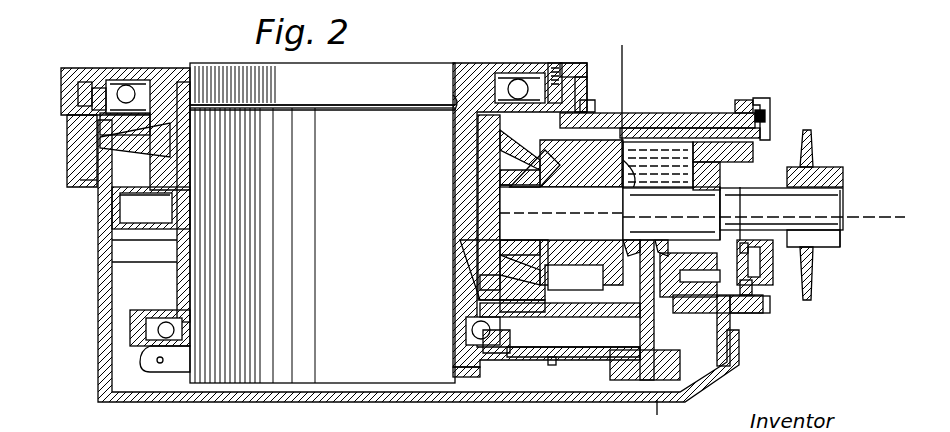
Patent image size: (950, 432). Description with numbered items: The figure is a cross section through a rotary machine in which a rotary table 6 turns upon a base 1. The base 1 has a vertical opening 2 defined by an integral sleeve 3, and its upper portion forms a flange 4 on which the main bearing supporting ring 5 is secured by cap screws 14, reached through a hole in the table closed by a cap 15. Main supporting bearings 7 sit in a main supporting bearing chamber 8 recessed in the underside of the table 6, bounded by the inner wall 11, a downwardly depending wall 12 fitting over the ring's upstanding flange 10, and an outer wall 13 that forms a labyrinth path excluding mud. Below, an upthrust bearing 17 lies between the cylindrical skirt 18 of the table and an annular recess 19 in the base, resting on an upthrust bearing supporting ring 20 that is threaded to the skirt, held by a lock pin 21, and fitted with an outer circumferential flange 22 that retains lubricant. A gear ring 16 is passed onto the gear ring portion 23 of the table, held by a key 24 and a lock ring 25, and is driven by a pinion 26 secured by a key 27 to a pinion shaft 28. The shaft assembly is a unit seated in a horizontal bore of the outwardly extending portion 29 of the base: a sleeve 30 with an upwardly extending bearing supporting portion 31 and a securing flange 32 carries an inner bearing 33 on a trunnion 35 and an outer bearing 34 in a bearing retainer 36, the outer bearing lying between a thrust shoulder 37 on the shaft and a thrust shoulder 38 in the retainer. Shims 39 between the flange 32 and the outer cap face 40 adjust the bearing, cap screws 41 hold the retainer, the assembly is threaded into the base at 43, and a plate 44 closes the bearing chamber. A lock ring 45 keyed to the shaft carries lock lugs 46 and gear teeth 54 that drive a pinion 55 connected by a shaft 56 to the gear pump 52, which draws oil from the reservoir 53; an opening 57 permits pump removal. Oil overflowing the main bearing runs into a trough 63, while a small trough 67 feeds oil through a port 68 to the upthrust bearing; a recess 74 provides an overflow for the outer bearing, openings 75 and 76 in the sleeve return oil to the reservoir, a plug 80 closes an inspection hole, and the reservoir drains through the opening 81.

The base 1 is at (100, 385).
The vertical opening 2 is at (177, 268).
The sleeve 3 is at (177, 248).
The flange 4 is at (80, 126).
The main bearing supporting means 5 is at (108, 118).
The rotary table 6 is at (172, 75).
The main supporting bearings 7 is at (128, 84).
The main supporting bearing chamber 8 is at (100, 92).
The upstanding annular flange 10 is at (150, 130).
The inner wall 11 is at (505, 78).
The downwardly depending wall 12 is at (585, 77).
The downwardly depending outer wall 13 is at (585, 95).
The cap screws 14 is at (84, 82).
The cap 15 is at (565, 70).
The gear ring 16 is at (478, 135).
The upthrust bearing 17 is at (146, 333).
The cylindrical skirt 18 is at (178, 293).
The annular recess 19 is at (470, 326).
The upthrust bearing supporting ring 20 is at (470, 367).
The lock pin 21 is at (462, 377).
The outer circumferential flange 22 is at (495, 353).
The gear ring portion 23 is at (500, 158).
The key 24 is at (450, 106).
The lock ring 25 is at (500, 178).
The pinion 26 is at (482, 282).
The key 27 is at (604, 188).
The pinion shaft 28 is at (764, 217).
The outwardly extending integral portion 29 is at (730, 113).
The sleeve 30 is at (728, 313).
The upwardly extending bearing supporting portion 31 is at (500, 262).
The securing flange 32 is at (740, 313).
The inner bearing 33 is at (500, 205).
The outer bearing 34 is at (752, 288).
The trunnion 35 is at (500, 230).
The bearing retainer 36 is at (760, 305).
The thrust shoulder 37 is at (815, 215).
The thrust shoulder 38 is at (760, 270).
The shims 39 is at (745, 113).
The outer cap face 40 is at (768, 100).
The cap screws 41 is at (766, 120).
The threaded end of portion 43 is at (322, 247).
The plate 44 is at (700, 113).
The lock ring 45 is at (572, 188).
The lock lugs 46 is at (612, 278).
The pump 52 is at (680, 380).
The reservoir 53 is at (728, 350).
The gear teeth 54 is at (636, 187).
The pinion 55 is at (655, 250).
The shaft 56 is at (660, 265).
The opening 57 is at (724, 203).
The trough 63 is at (90, 184).
The small trough 67 is at (120, 220).
The port 68 is at (178, 218).
The recess 74 is at (758, 256).
The opening 75 is at (500, 285).
The opening 76 is at (565, 295).
The plug 80 is at (600, 112).
The drain opening 81 is at (555, 362).